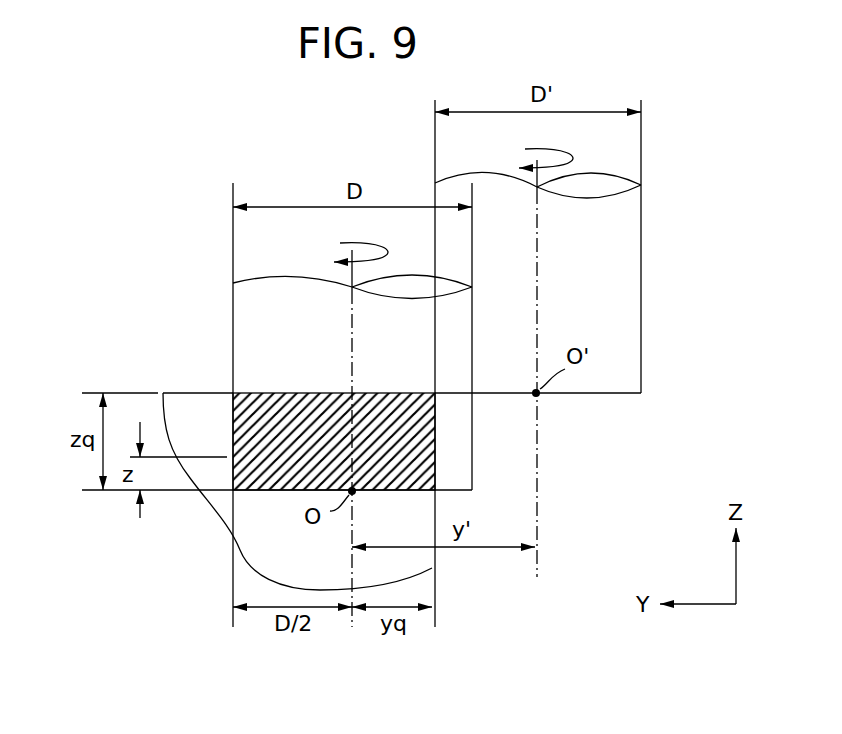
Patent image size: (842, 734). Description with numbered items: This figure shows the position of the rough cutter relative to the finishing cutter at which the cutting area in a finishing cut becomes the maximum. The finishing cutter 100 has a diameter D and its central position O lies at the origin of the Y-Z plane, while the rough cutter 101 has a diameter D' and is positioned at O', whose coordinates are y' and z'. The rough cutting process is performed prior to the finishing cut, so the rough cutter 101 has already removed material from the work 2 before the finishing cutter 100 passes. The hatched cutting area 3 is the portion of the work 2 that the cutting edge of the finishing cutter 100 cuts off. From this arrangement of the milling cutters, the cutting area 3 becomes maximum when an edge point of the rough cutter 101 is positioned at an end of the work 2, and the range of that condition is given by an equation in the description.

The work 2 is at (224, 512).
The cutting area 3 is at (270, 397).
The finishing cutter 100 is at (452, 331).
The rough cutter 101 is at (622, 225).